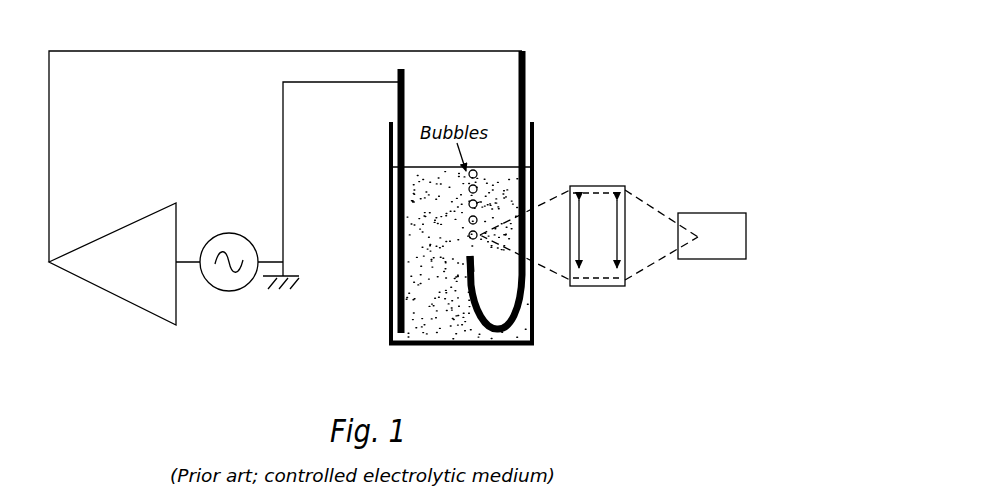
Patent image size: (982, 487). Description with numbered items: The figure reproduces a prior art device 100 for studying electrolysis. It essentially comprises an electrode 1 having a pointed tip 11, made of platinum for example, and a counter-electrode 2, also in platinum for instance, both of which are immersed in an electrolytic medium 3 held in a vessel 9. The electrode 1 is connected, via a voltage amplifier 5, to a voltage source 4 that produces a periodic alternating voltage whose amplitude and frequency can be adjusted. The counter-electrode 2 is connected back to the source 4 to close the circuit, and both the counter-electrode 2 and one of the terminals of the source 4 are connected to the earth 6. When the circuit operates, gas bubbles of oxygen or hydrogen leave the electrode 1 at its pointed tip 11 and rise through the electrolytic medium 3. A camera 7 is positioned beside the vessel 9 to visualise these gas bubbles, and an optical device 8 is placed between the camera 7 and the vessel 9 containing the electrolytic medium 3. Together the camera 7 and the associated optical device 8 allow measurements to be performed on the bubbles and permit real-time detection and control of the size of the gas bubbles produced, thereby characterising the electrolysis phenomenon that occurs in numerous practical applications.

The device 100 is at (559, 62).
The electrode 1 is at (520, 314).
The counter-electrode 2 is at (396, 98).
The electrolytic medium 3 is at (448, 326).
The voltage source 4 is at (228, 294).
The voltage amplifier 5 is at (105, 300).
The earth 6 is at (281, 297).
The camera 7 is at (715, 262).
The optical device 8 is at (604, 178).
The vessel 9 is at (538, 131).
The pointed tip 11 is at (466, 256).